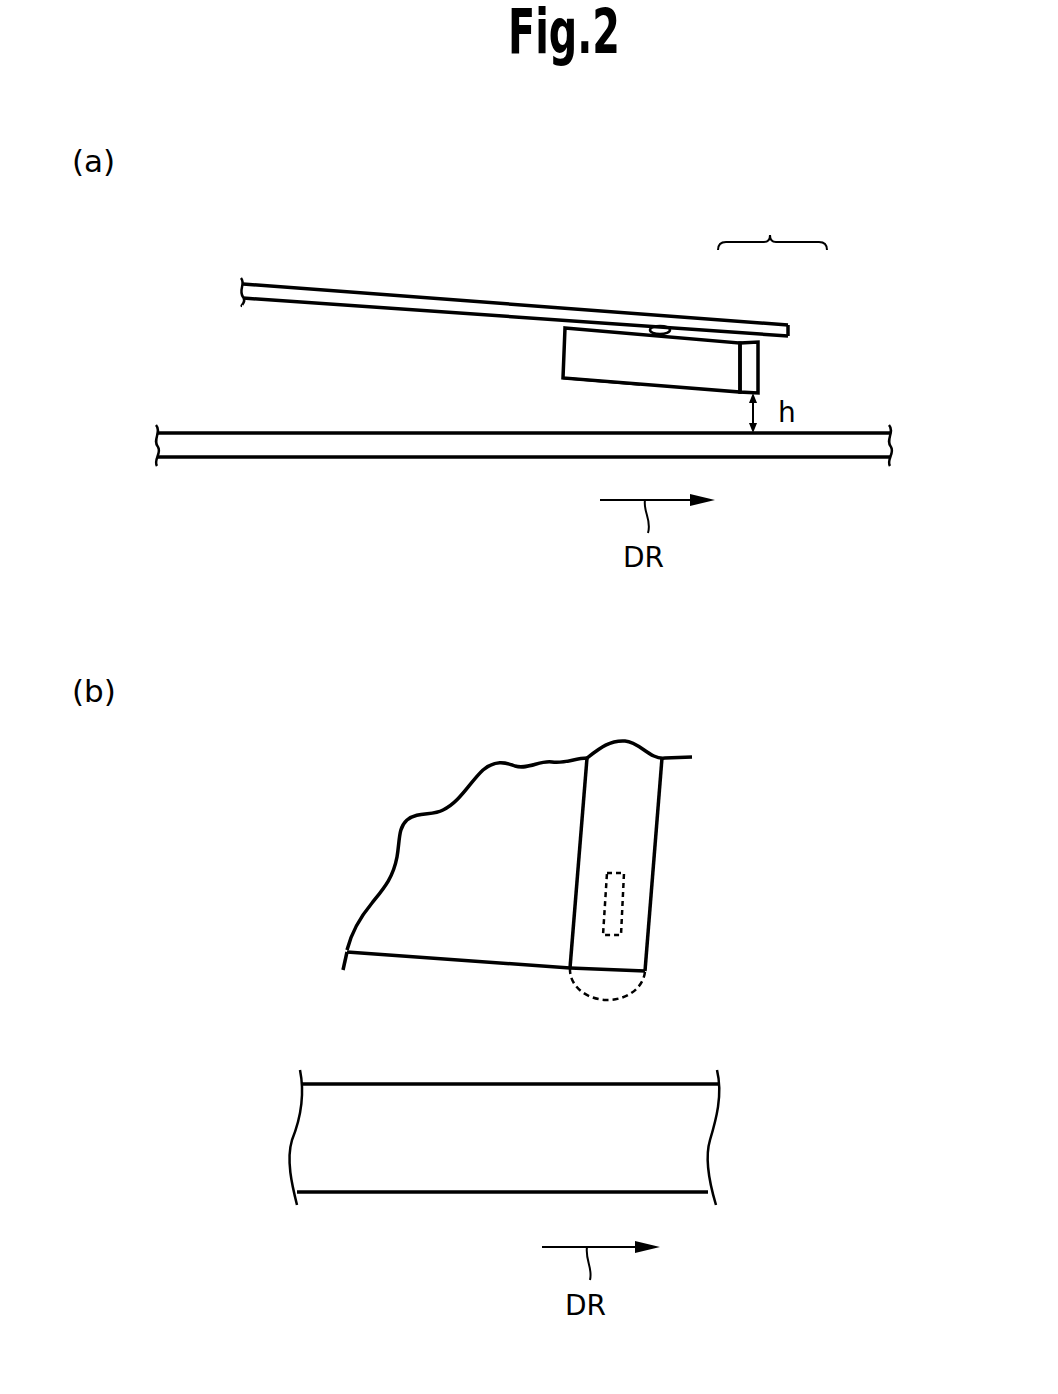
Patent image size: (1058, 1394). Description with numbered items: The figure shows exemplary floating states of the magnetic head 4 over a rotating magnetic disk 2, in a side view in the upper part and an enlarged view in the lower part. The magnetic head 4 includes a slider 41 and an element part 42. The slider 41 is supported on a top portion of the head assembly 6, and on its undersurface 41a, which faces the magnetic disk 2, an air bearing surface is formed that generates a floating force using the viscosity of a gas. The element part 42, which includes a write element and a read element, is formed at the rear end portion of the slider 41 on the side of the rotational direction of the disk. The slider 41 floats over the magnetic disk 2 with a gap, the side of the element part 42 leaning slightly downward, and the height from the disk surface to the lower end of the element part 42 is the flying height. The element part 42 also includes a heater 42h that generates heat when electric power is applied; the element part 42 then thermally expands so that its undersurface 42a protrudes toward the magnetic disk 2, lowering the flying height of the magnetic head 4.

The magnetic disk 2 is at (251, 458).
The magnetic head 4 is at (772, 225).
The head assembly 6 is at (388, 296).
The slider 41 is at (723, 347).
The undersurface of slider 41a is at (585, 382).
The element part 42 is at (750, 363).
The undersurface of element part 42a is at (603, 975).
The heater 42h is at (623, 912).